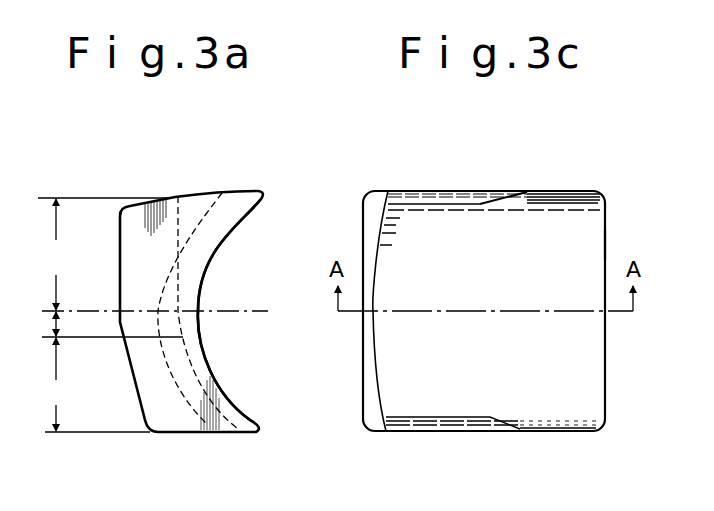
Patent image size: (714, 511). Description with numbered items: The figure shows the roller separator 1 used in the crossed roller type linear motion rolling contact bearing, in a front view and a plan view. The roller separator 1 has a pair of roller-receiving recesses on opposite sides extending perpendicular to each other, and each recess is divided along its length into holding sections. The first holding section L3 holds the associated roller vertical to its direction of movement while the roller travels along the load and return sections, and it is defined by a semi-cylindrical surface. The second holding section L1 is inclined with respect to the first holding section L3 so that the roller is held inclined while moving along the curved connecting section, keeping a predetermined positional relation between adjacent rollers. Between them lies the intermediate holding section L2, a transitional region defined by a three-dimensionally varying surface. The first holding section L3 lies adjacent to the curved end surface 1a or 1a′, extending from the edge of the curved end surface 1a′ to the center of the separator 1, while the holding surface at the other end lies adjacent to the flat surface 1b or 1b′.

In FIG. 3A, the roller separator 1 is at (162, 441).
In FIG. 3C, the roller separator 1 is at (567, 440).
In FIG. 3A, the curved end surface 1a is at (194, 252).
In FIG. 3C, the curved end surface 1a is at (368, 388).
In FIG. 3A, the curved end surface 1a′ is at (194, 196).
In FIG. 3C, the curved end surface 1a′ is at (431, 191).
In FIG. 3C, the flat surface 1b is at (605, 236).
In FIG. 3A, the flat surface 1b′ is at (220, 434).
In FIG. 3C, the flat surface 1b′ is at (428, 432).
In FIG. 3A, the second holding section L1 is at (56, 384).
In FIG. 3A, the intermediate holding section L2 is at (56, 324).
In FIG. 3A, the first holding section L3 is at (57, 254).